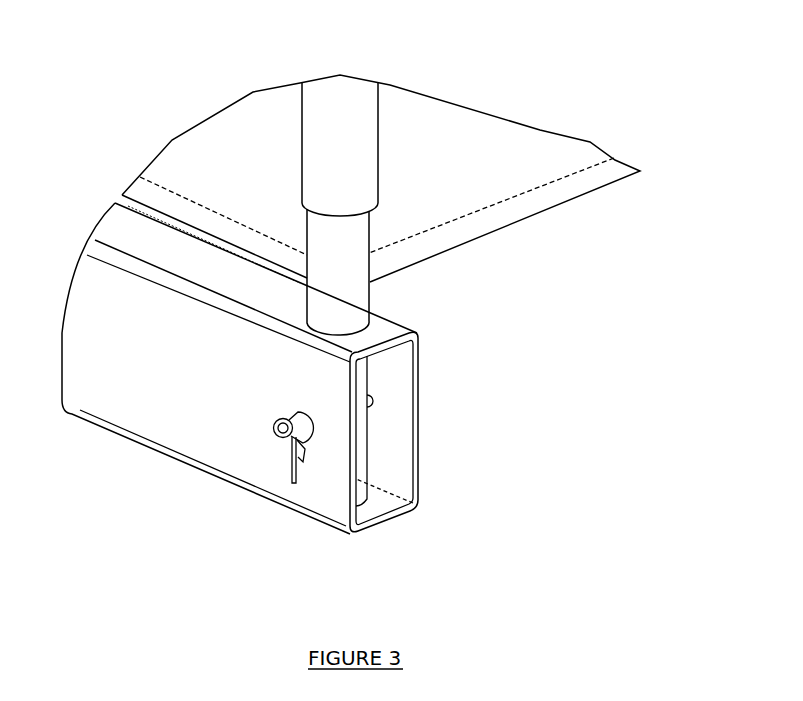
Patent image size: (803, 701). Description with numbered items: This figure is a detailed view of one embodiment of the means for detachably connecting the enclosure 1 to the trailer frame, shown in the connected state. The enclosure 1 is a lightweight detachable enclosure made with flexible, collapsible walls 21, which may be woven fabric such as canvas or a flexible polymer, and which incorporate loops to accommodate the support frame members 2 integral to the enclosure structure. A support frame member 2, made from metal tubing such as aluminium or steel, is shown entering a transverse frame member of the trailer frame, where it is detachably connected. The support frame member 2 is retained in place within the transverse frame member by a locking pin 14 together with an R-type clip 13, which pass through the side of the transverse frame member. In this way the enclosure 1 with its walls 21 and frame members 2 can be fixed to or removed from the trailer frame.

The detachable enclosure 1 is at (552, 237).
The support frame member 2 is at (370, 233).
The R-type clip 13 is at (298, 475).
The locking pin 14 is at (279, 437).
The walls 21 is at (218, 158).